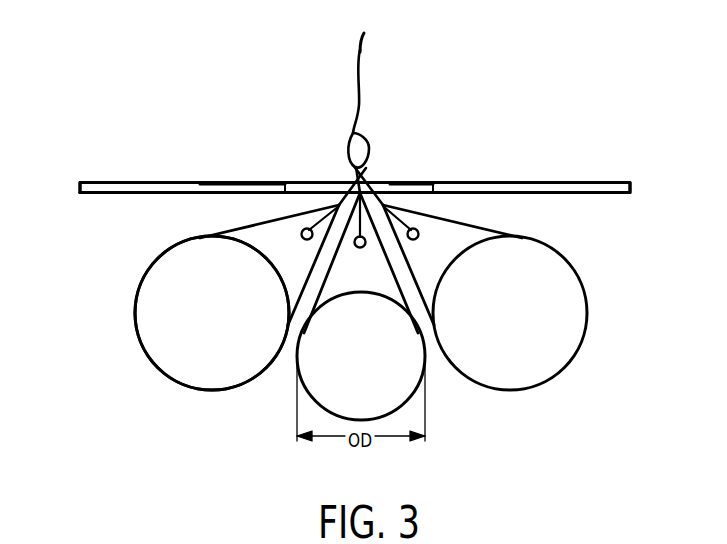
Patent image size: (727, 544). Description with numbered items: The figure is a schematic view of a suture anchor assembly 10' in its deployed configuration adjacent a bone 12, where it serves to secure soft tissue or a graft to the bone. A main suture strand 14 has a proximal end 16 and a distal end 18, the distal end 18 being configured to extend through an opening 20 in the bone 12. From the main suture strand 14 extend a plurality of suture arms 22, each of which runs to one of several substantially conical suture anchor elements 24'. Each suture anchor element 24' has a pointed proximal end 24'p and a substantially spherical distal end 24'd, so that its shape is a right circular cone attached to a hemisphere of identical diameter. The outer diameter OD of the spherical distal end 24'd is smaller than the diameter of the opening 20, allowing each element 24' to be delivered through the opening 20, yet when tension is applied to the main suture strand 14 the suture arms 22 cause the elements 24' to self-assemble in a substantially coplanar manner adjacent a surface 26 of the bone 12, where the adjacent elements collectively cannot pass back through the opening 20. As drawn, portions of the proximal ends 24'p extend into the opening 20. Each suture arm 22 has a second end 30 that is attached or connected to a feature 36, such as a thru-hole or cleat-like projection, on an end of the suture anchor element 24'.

The suture anchor assembly 10' is at (355, 116).
The bone 12 is at (578, 182).
The main suture strand 14 is at (362, 73).
The proximal end 16 is at (358, 44).
The distal end 18 is at (352, 137).
The opening 20 is at (270, 182).
The suture arms 22 is at (356, 172).
The substantially conical suture anchor element 24' is at (361, 328).
The pointed proximal end 24'p is at (261, 219).
The substantially spherical distal end 24'd is at (174, 313).
The surface 26 is at (137, 196).
The second end 30 is at (405, 203).
The feature 36 is at (420, 234).